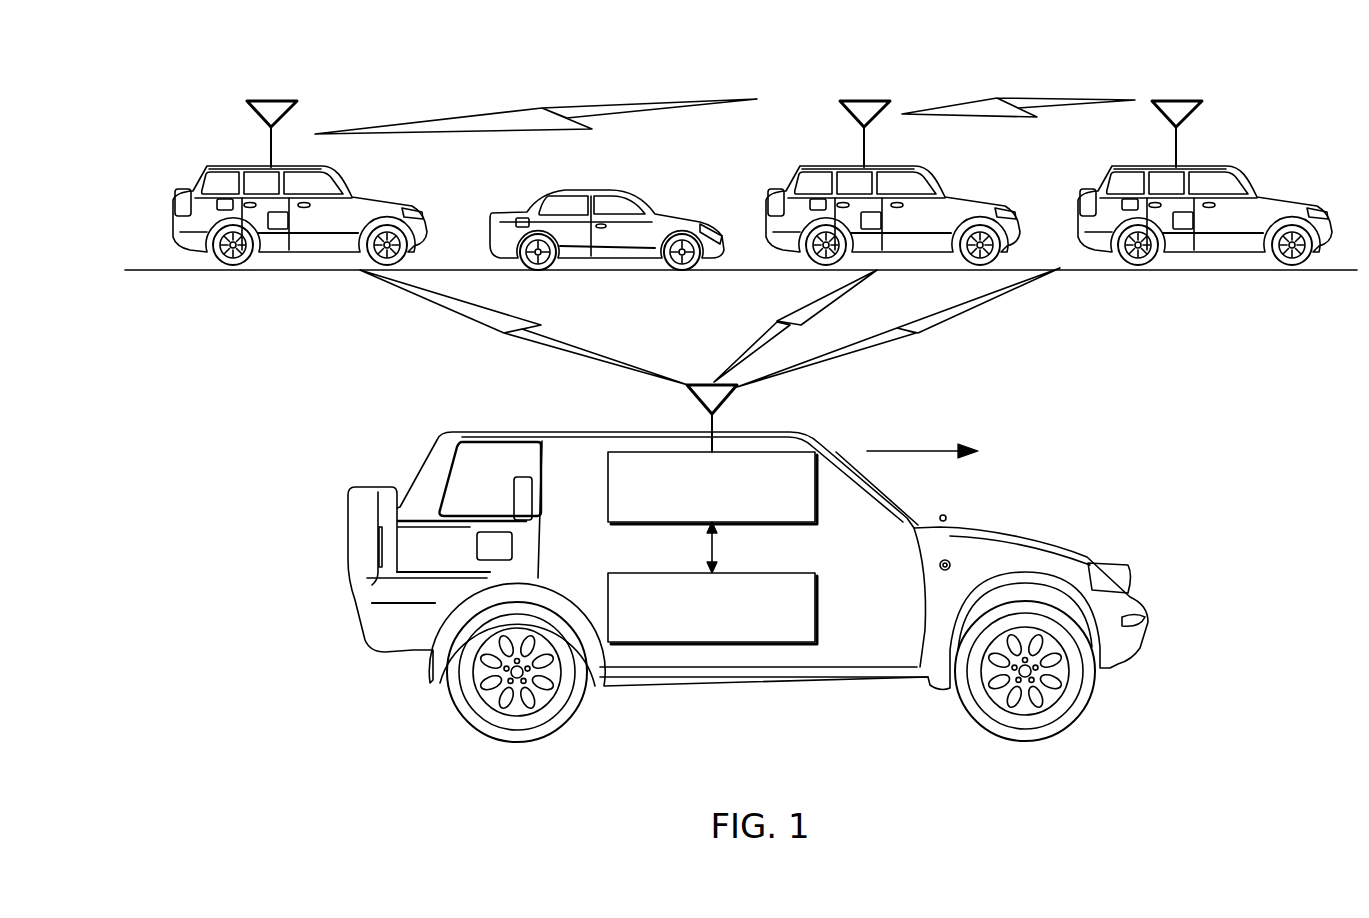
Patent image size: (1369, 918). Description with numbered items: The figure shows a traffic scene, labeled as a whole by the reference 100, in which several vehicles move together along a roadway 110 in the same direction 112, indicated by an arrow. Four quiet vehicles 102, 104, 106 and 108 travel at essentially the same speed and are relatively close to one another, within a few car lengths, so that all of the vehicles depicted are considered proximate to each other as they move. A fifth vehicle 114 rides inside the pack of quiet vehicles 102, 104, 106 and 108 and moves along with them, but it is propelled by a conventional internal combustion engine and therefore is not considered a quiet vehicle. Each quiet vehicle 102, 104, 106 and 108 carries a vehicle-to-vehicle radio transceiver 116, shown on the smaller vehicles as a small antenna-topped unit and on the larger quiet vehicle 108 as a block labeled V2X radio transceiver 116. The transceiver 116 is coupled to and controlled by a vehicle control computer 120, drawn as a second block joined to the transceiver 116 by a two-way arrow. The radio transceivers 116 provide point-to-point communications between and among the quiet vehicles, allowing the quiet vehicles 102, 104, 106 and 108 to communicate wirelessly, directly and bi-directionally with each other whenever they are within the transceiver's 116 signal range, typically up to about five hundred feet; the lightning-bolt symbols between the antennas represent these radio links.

The vehicle communication system 100 is at (82, 106).
The quiet vehicle 102 is at (196, 183).
The quiet vehicle 104 is at (798, 179).
The quiet vehicle 106 is at (1108, 182).
The quiet vehicle 108 is at (835, 563).
The roadway 110 is at (1071, 424).
The direction 112 is at (914, 448).
The fifth vehicle 114 is at (542, 198).
The vehicle-to-vehicle radio transceiver 116 is at (606, 482).
The vehicle control computer 120 is at (818, 608).